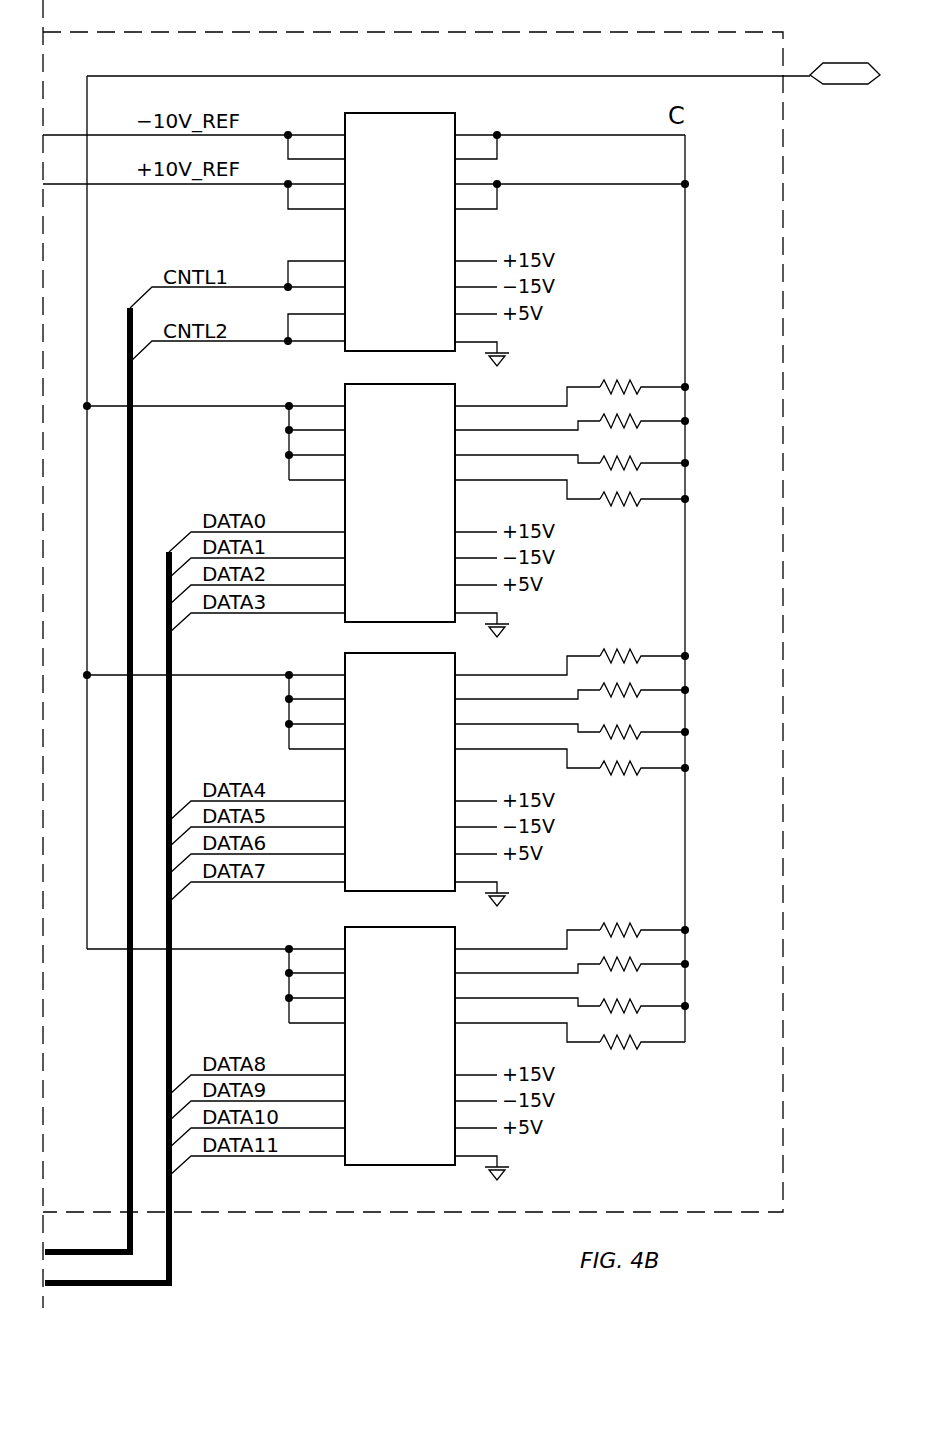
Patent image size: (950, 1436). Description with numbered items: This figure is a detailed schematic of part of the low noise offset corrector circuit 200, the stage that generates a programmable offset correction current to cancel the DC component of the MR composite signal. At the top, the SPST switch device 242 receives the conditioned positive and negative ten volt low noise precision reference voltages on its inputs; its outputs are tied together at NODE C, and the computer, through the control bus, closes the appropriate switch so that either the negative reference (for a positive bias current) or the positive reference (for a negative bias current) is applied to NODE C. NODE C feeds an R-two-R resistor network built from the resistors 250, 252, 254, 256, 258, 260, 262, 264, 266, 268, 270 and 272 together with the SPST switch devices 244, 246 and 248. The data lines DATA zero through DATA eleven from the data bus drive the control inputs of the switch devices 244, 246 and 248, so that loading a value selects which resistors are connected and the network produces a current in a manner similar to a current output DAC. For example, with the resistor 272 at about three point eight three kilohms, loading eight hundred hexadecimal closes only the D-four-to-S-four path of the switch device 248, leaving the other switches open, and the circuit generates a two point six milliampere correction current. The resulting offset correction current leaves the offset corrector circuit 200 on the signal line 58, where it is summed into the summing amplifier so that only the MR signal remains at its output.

The low noise offset corrector circuit 200 is at (383, 33).
The signal line 58 is at (843, 78).
The SPST switch device 242 is at (367, 113).
The SPST switch device 244 is at (372, 384).
The SPST switch device 246 is at (372, 653).
The SPST switch device 248 is at (372, 927).
The resistor 250 is at (622, 382).
The resistor 252 is at (622, 416).
The resistor 254 is at (622, 458).
The resistor 256 is at (622, 494).
The resistor 258 is at (622, 651).
The resistor 260 is at (622, 685).
The resistor 262 is at (622, 727).
The resistor 264 is at (622, 763).
The resistor 266 is at (622, 925).
The resistor 268 is at (622, 959).
The resistor 270 is at (622, 1001).
The resistor 272 is at (622, 1037).